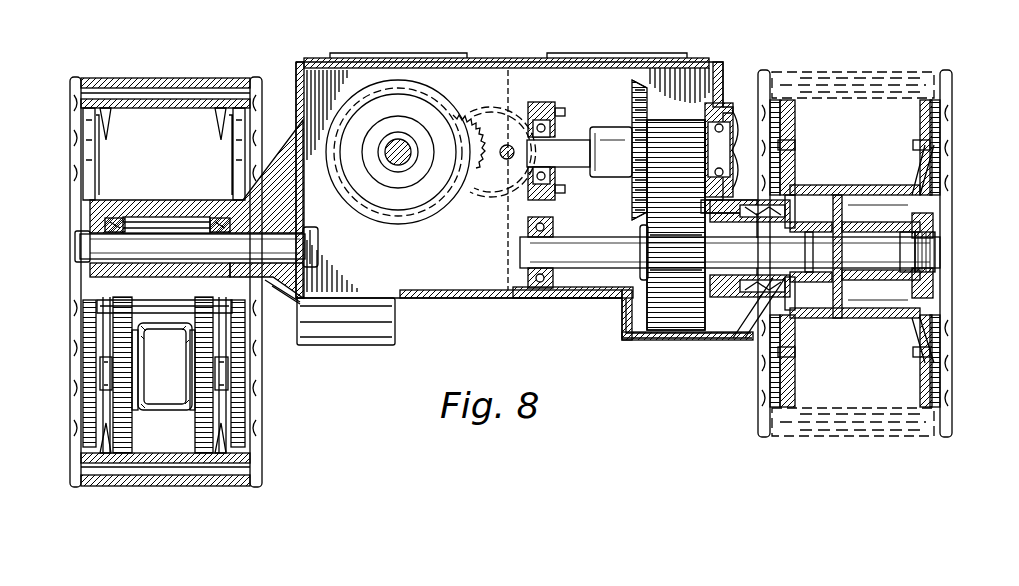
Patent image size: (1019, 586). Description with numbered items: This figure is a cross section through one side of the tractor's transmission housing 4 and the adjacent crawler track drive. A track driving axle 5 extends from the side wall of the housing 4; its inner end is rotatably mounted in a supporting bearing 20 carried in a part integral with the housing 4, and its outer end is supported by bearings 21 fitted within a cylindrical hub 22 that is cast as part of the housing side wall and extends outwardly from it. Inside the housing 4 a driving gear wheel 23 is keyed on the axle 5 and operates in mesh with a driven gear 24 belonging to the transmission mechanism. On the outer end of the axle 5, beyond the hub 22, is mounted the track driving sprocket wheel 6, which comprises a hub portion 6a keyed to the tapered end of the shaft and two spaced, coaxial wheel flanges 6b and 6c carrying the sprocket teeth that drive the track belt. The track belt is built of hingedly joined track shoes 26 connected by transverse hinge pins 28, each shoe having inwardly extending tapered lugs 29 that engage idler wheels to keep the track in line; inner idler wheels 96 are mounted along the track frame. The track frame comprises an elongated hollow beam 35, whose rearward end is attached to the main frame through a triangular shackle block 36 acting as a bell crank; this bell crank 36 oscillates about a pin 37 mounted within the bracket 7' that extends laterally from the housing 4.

The housing 4 is at (450, 298).
The axle 5 is at (605, 258).
The track driving sprocket wheel 6 is at (923, 183).
The hub portion 6a is at (870, 225).
The wheel flange 6b is at (790, 118).
The wheel flange 6c is at (945, 110).
The bracket 7' is at (242, 232).
The supporting bearing 20 is at (520, 245).
The bearing 21 is at (745, 300).
The cylindrical hub 22 is at (805, 310).
The driving gear wheel 23 is at (682, 330).
The driven gear 24 is at (683, 130).
The track shoe 26 is at (195, 487).
The hinge pin 28 is at (115, 467).
The tapered lug 29 is at (245, 448).
The hollow beam 35 is at (140, 340).
The shackle block 36 is at (150, 222).
The pin 37 is at (82, 236).
The idler wheel 96 is at (92, 405).